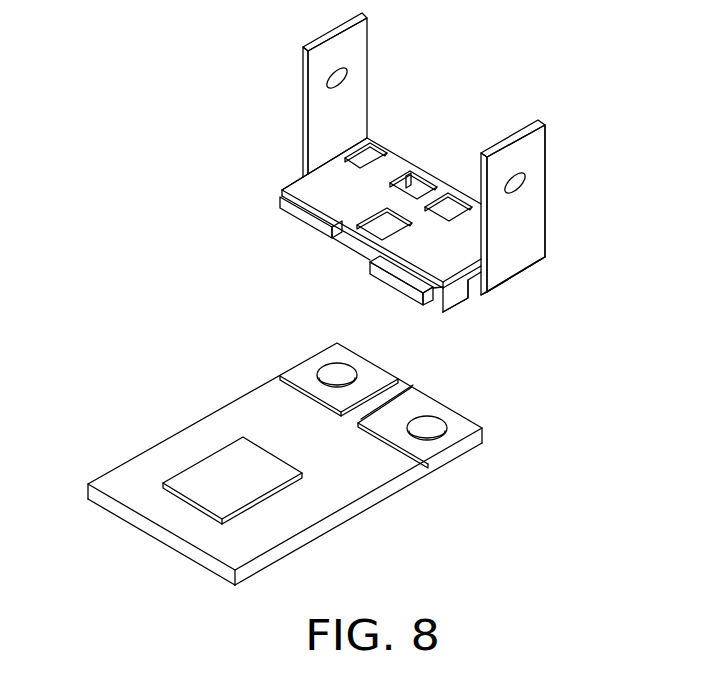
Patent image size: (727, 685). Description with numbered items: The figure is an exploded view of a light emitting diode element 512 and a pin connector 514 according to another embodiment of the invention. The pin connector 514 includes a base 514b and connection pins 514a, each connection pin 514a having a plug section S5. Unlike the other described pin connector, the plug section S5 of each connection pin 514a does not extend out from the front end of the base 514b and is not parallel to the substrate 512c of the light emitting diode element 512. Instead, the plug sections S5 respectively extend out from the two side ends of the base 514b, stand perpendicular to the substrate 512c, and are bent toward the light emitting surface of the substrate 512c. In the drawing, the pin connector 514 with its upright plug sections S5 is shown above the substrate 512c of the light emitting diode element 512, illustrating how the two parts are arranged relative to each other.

The pin connector 514 is at (388, 184).
The connection pin 514a is at (518, 153).
The base 514b is at (335, 202).
The plug section S5 is at (551, 120).
The light emitting diode element 512 is at (258, 464).
The substrate 512c is at (177, 450).